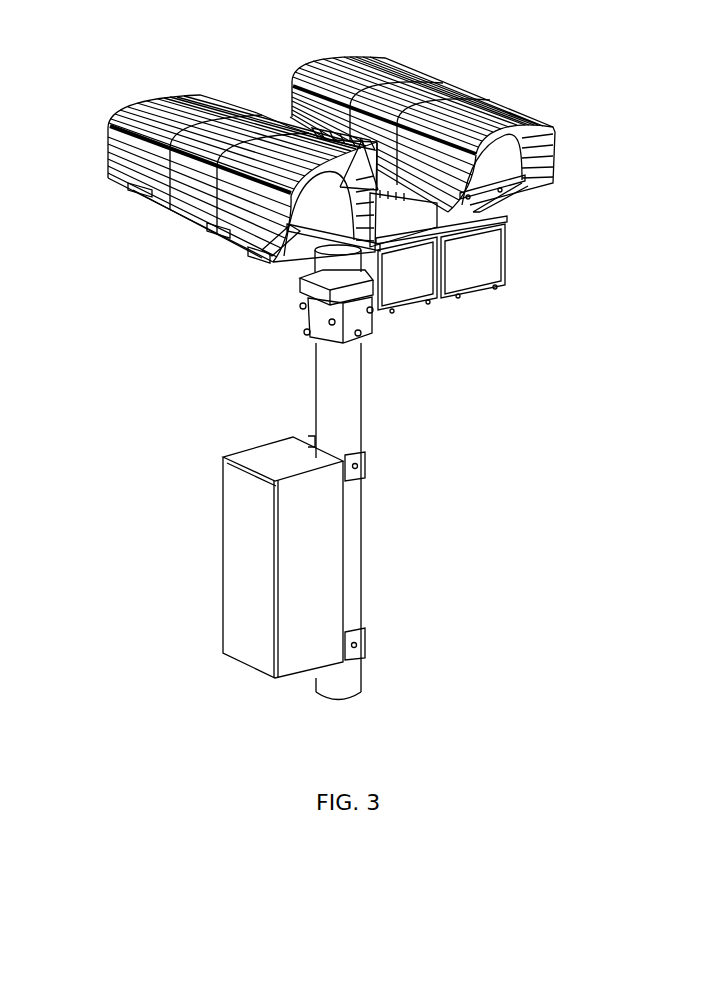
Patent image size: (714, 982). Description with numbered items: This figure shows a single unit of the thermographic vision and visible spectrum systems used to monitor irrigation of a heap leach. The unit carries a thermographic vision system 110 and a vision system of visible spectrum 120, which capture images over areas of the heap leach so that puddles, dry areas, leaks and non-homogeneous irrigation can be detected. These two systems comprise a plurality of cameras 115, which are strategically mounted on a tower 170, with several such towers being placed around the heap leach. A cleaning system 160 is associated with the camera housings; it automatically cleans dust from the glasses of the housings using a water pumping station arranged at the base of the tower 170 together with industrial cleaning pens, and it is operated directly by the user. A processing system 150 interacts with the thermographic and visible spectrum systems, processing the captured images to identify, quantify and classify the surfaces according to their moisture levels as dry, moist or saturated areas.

The thermographic vision system 110 is at (482, 85).
The vision system of visible spectrum 120 is at (118, 108).
The cameras 115 is at (166, 246).
The cleaning system 160 is at (500, 200).
The tower 170 is at (368, 412).
The processing system 150 is at (219, 578).